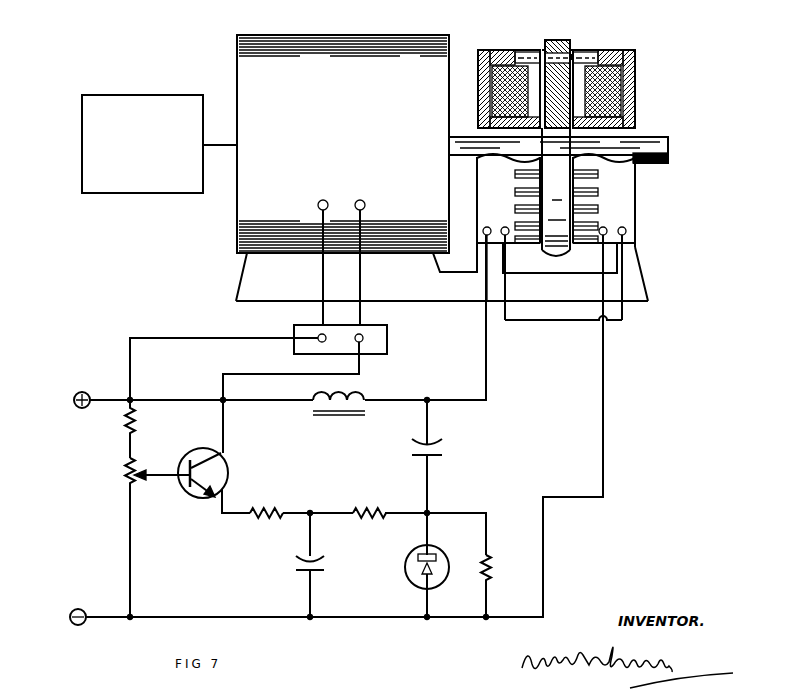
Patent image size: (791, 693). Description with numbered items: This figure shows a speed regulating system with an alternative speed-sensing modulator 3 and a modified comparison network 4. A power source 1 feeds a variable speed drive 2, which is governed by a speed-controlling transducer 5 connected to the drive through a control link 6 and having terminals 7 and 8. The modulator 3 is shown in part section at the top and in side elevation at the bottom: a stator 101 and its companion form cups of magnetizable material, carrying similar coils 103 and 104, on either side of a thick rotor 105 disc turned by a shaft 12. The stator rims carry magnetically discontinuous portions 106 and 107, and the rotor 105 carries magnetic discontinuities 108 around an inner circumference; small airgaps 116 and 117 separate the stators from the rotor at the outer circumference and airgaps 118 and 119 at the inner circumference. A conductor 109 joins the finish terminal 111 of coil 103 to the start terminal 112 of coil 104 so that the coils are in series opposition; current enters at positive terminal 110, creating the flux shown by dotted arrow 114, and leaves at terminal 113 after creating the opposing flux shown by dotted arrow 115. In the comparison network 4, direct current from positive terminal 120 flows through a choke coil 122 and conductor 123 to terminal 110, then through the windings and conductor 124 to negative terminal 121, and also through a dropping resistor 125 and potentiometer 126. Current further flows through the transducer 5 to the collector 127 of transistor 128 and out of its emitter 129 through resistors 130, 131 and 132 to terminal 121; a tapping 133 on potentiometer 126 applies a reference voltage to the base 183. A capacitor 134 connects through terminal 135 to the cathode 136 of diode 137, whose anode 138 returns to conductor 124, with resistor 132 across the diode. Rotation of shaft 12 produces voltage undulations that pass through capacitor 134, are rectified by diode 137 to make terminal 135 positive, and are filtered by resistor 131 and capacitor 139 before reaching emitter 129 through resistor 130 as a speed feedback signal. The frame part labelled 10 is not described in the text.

The power source 1 is at (134, 157).
The variable speed drive 2 is at (333, 160).
The speed-sensing modulator 3 is at (574, 177).
The comparison network 4 is at (300, 467).
The speed-controlling transducer 5 is at (340, 342).
The control link 6 is at (358, 283).
The terminal 7 is at (319, 342).
The terminal 8 is at (363, 342).
The stator frame 10 is at (635, 58).
The shaft 12 is at (669, 150).
The stator 101 is at (478, 58).
The coil 103 is at (480, 117).
The coil 104 is at (635, 116).
The rotor 105 is at (556, 40).
The magnetically discontinuous portions 106 is at (520, 53).
The magnetically discontinuous portions 107 is at (594, 53).
The magnetic discontinuities 108 is at (574, 55).
The conductor 109 is at (553, 322).
The positive terminal 110 is at (483, 231).
The finish terminal 111 is at (503, 266).
The start terminal 112 is at (626, 231).
The terminal 113 is at (606, 224).
The dotted arrow 114 is at (485, 97).
The dotted arrow 115 is at (628, 97).
The airgap 116 is at (542, 50).
The airgap 117 is at (572, 52).
The airgap 118 is at (537, 134).
The airgap 119 is at (578, 134).
The positive terminal 120 is at (73, 399).
The negative terminal 121 is at (72, 609).
The choke coil 122 is at (351, 398).
The conductor 123 is at (478, 402).
The conductor 124 is at (216, 616).
The dropping resistor 125 is at (127, 412).
The potentiometer 126 is at (127, 463).
The collector 127 is at (212, 461).
The transistor 128 is at (201, 479).
The emitter 129 is at (198, 498).
The resistor 130 is at (280, 506).
The resistor 131 is at (378, 506).
The resistor 132 is at (489, 577).
The tapping 133 is at (147, 472).
The capacitor 134 is at (442, 456).
The terminal 135 is at (429, 512).
The cathode 136 is at (436, 556).
The diode 137 is at (419, 565).
The anode 138 is at (420, 570).
The capacitor 139 is at (296, 569).
The base 183 is at (183, 486).